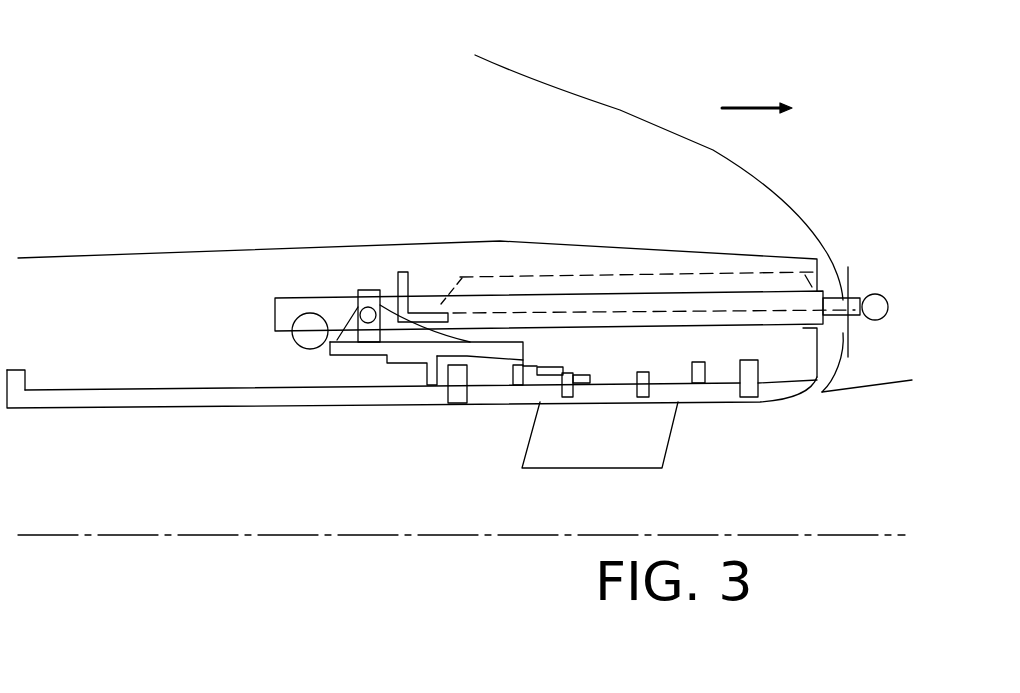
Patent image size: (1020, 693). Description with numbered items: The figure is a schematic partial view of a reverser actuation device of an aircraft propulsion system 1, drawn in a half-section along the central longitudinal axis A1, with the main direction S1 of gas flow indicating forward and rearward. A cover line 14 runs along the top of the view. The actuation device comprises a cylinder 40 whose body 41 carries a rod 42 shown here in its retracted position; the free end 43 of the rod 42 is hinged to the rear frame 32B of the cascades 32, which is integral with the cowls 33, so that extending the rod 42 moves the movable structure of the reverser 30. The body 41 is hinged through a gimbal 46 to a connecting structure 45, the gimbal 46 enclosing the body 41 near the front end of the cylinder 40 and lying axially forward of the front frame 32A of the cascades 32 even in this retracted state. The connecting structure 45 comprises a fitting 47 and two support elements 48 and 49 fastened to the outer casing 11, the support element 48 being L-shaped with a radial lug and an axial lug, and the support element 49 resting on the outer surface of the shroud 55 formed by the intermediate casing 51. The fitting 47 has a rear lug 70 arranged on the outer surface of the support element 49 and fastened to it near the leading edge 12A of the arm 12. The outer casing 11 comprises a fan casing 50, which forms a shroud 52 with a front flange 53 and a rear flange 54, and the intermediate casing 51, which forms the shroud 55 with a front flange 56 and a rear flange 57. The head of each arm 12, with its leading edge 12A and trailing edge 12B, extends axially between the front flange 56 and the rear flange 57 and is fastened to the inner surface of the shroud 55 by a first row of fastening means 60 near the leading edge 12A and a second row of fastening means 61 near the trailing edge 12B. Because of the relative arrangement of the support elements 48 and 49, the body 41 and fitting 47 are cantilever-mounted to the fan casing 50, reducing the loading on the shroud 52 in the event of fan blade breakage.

The aircraft propulsion system 1 is at (100, 123).
The outer casing 11 is at (387, 568).
The arm 12 is at (603, 457).
The leading edge 12A is at (528, 438).
The trailing edge 12B is at (688, 450).
The cover plate 14 is at (143, 252).
The reverser 30 is at (805, 175).
The cascades 32 is at (648, 372).
The front frame 32A is at (405, 272).
The rear frame 32B is at (867, 445).
The cowls 33 is at (898, 373).
The cylinder 40 is at (373, 34).
The body 41 is at (302, 297).
The rod 42 is at (643, 212).
The free end 43 is at (877, 297).
The connecting structure 45 is at (617, 150).
The gimbal 46 is at (368, 290).
The fitting 47 is at (506, 350).
The support element 48 is at (417, 353).
The support element 49 is at (580, 378).
The fan casing 50 is at (228, 412).
The intermediate casing 51 is at (490, 423).
The shroud 52 is at (154, 402).
The front flange 53 is at (17, 367).
The rear flange 54 is at (440, 392).
The shroud 55 is at (717, 398).
The front flange 56 is at (458, 407).
The rear flange 57 is at (753, 393).
The fastening means 60 is at (565, 372).
The fastening means 61 is at (677, 358).
The rear lug 70 is at (548, 368).
The main direction of gas flow S1 is at (755, 105).
The central longitudinal axis A1 is at (461, 566).